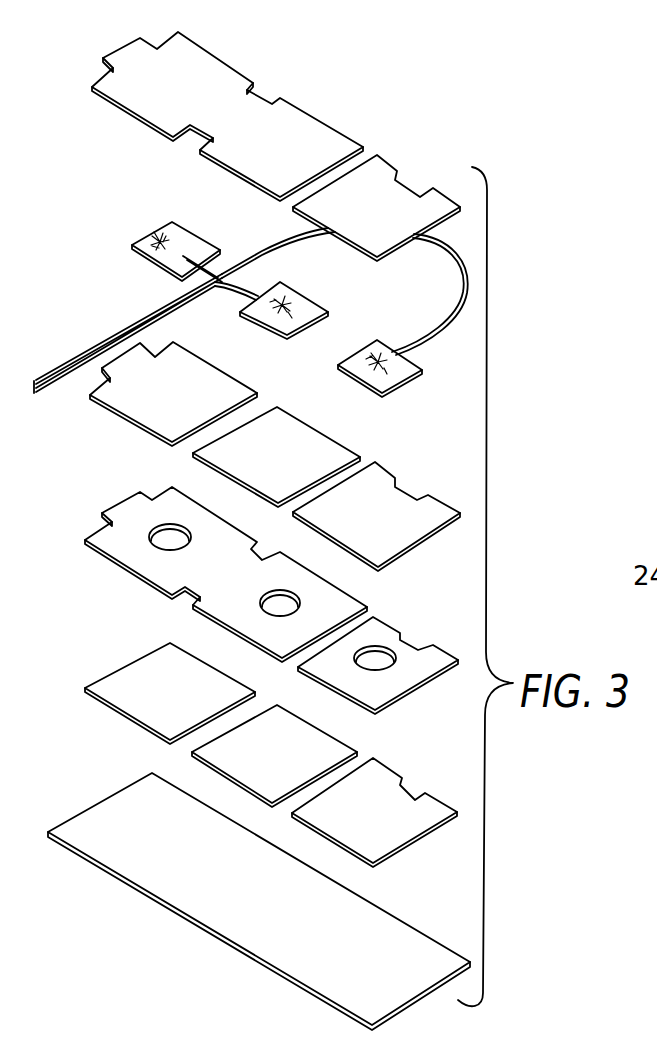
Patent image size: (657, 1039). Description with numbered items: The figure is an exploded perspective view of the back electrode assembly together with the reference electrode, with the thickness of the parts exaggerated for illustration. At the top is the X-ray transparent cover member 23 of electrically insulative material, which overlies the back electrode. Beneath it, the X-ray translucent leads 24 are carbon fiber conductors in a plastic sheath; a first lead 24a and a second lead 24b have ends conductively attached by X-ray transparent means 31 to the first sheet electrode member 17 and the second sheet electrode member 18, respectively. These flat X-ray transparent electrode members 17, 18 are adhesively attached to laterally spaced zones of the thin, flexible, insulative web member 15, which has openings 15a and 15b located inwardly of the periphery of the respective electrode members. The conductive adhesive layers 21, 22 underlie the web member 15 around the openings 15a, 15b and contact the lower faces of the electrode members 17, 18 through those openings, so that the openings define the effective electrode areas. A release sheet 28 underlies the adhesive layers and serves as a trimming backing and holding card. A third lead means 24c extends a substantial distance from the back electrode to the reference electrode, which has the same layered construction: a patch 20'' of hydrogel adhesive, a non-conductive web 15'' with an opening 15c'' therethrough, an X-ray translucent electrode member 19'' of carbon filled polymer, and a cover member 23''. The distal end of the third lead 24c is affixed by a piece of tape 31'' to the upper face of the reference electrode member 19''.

The cover member 23 is at (227, 102).
The cover member 23'' is at (381, 185).
The X-ray transparent attaching means 31 is at (176, 227).
The first lead 24a is at (158, 275).
The X-ray translucent leads 24 is at (103, 343).
The second lead 24b is at (287, 273).
The third lead means 24c is at (450, 301).
The piece of tape 31'' is at (393, 378).
The first sheet electrode member 17 is at (113, 410).
The second sheet electrode member 18 is at (230, 474).
The reference electrode member 19'' is at (382, 520).
The web member 15 is at (187, 574).
The opening 15a is at (157, 547).
The opening 15b is at (255, 610).
The opening 15c'' is at (407, 629).
The web 15'' is at (379, 664).
The conductive adhesive layer 21 is at (122, 693).
The conductive adhesive layer 22 is at (203, 748).
The patch of hydrogel adhesive 20'' is at (374, 822).
The release sheet 28 is at (192, 893).